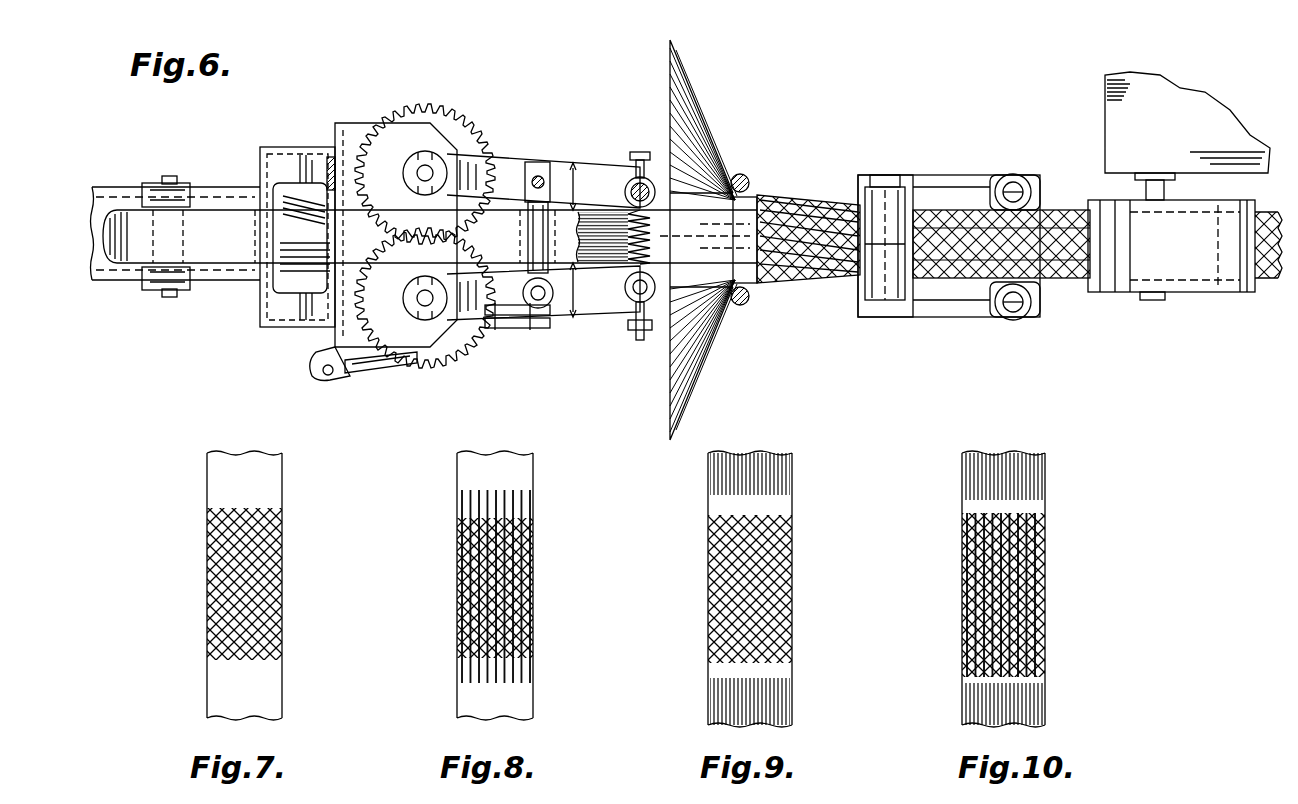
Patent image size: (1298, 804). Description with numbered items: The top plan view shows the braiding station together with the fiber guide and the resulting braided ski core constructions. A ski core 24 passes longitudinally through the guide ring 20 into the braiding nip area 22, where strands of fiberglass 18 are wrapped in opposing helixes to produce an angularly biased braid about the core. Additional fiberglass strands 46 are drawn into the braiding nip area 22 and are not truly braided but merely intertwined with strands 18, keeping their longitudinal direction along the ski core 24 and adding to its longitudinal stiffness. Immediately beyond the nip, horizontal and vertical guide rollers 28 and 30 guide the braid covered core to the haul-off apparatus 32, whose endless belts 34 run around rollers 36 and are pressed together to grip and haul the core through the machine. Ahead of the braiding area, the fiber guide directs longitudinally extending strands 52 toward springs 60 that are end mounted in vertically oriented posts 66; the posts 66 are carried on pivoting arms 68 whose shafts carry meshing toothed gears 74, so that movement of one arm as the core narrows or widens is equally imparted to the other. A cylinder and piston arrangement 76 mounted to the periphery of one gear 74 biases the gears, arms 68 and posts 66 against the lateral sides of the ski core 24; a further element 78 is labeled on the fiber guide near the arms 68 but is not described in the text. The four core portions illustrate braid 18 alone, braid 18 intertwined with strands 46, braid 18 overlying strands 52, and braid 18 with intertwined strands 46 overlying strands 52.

In FIG. 7, the strands of fiberglass 18 is at (245, 508).
In FIG. 8, the strands of fiberglass 18 is at (527, 565).
In FIG. 9, the strands of fiberglass 18 is at (770, 578).
In FIG. 10, the strands of fiberglass 18 is at (1020, 586).
In FIG. 6, the guide ring 20 is at (741, 176).
In FIG. 6, the braiding nip area 22 is at (360, 127).
In FIG. 6, the ski core 24 is at (205, 213).
In FIG. 7, the ski core 24 is at (275, 473).
In FIG. 8, the ski core 24 is at (520, 470).
In FIG. 9, the ski core 24 is at (795, 477).
In FIG. 10, the ski core 24 is at (1047, 475).
In FIG. 6, the horizontal guide rollers 28 is at (880, 205).
In FIG. 6, the vertical guide rollers 30 is at (1013, 174).
In FIG. 6, the haul-off apparatus 32 is at (1170, 103).
In FIG. 6, the endless belts 34 is at (1140, 225).
In FIG. 6, the rollers 36 is at (1115, 292).
In FIG. 8, the fiberglass strands 46 is at (520, 505).
In FIG. 10, the fiberglass strands 46 is at (1045, 548).
In FIG. 9, the strands 52 is at (745, 468).
In FIG. 10, the strands 52 is at (1012, 465).
In FIG. 6, the springs 60 is at (612, 250).
In FIG. 6, the vertically oriented posts 66 is at (658, 178).
In FIG. 6, the pivoting arms 68 is at (597, 178).
In FIG. 6, the meshing toothed gears 74 is at (430, 115).
In FIG. 6, the cylinder and piston arrangement 76 is at (367, 366).
In FIG. 6, the pin 78 is at (530, 223).